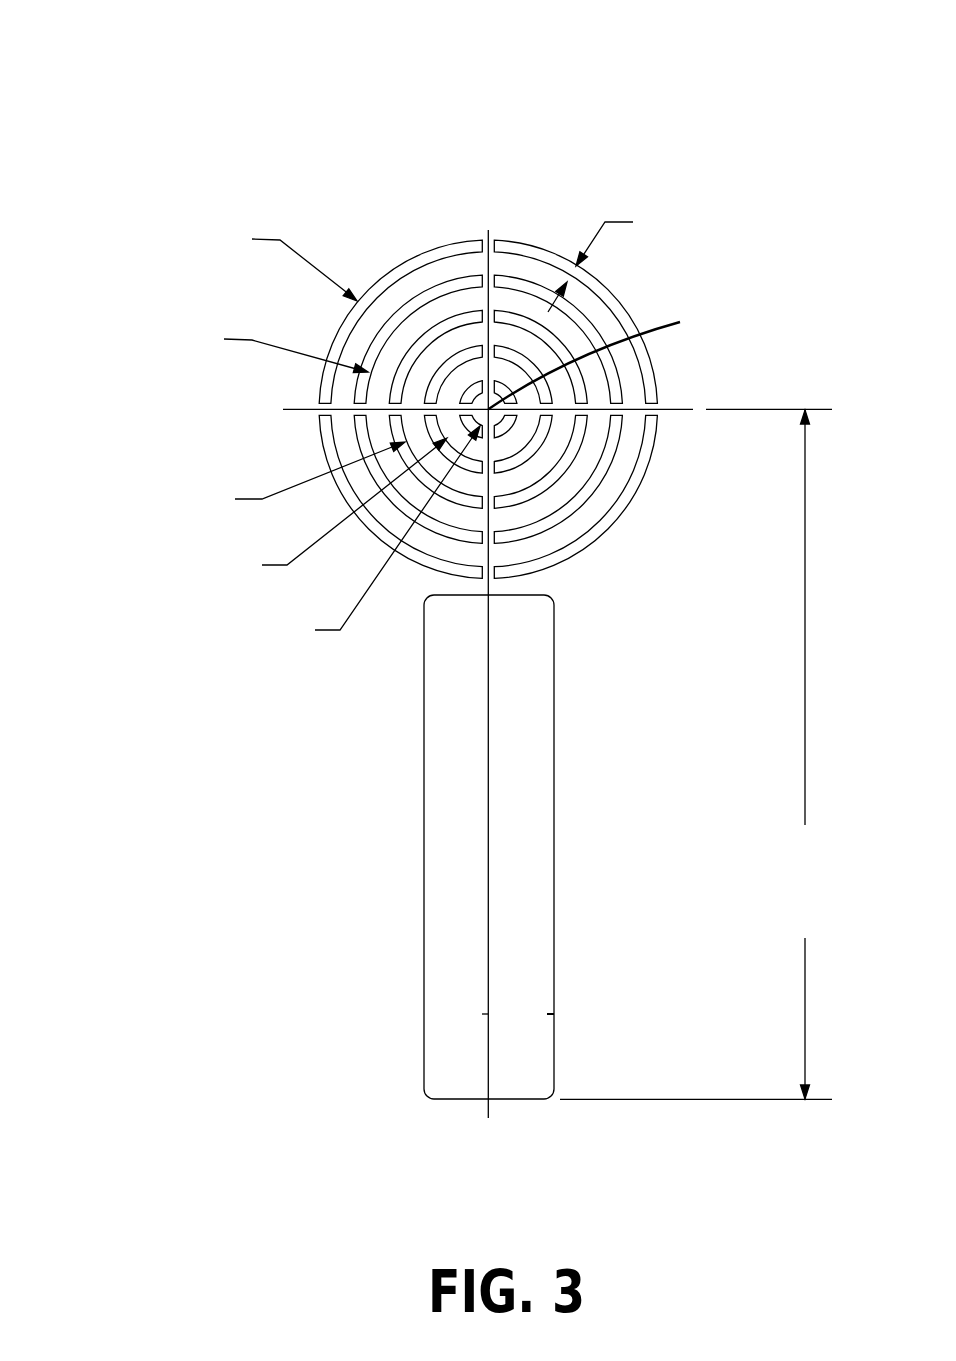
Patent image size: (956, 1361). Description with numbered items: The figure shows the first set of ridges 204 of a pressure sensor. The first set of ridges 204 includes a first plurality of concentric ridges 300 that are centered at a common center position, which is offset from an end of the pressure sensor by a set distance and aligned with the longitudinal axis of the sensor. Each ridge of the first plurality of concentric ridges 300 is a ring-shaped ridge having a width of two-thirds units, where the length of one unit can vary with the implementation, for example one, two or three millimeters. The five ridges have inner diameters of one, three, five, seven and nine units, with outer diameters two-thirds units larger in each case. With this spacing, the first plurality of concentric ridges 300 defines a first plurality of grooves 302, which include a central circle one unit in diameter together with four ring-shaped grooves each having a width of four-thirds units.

The first set of ridges 204 is at (78, 58).
The first plurality of concentric ridges 300 is at (424, 237).
The first plurality of grooves 302 is at (404, 283).